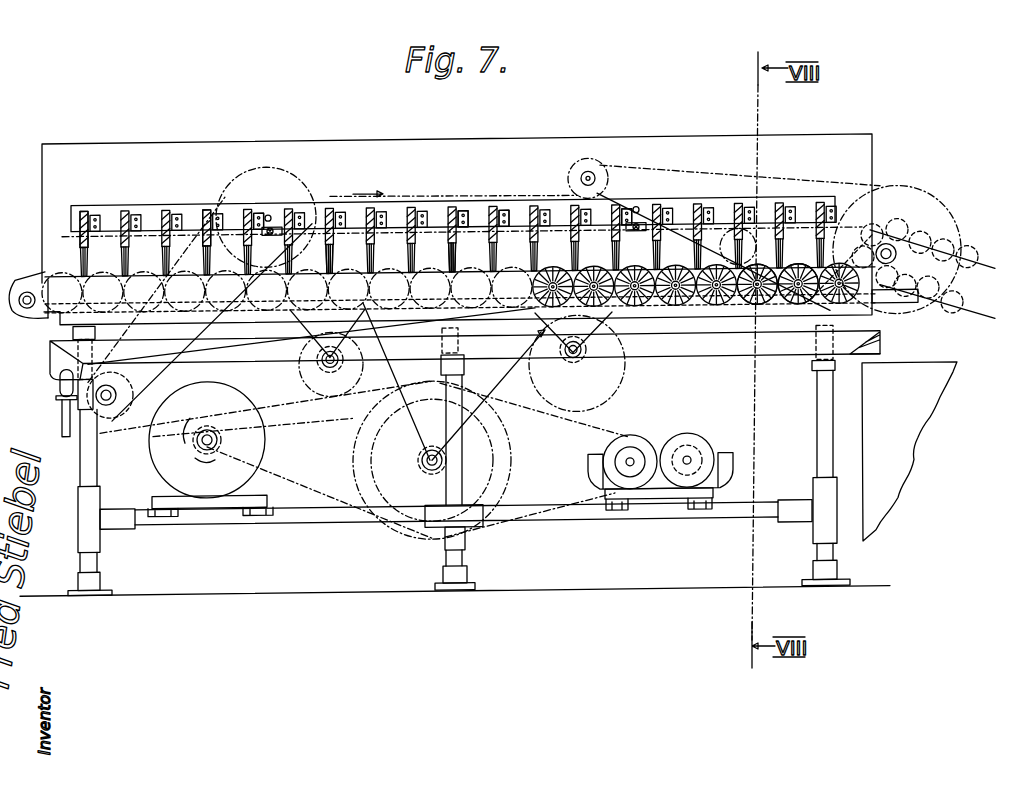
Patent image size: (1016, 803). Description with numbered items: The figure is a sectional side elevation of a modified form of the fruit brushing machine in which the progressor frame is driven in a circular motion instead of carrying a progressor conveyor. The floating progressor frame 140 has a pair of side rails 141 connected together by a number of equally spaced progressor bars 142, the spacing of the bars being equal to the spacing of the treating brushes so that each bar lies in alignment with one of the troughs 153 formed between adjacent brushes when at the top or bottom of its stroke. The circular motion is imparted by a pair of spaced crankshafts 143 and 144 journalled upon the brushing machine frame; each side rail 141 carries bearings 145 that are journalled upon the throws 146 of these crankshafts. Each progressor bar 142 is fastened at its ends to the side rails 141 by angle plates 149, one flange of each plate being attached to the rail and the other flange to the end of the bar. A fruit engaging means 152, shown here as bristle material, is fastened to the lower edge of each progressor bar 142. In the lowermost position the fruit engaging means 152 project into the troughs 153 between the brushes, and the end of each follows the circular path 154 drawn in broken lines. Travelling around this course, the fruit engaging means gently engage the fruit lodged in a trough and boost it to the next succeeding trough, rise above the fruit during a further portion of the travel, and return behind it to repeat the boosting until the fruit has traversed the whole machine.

The progressor frame 140 is at (152, 206).
The side rails 141 is at (194, 212).
The progressor bars 142 is at (86, 213).
The crankshaft 143 is at (271, 219).
The crankshaft 144 is at (638, 215).
The bearings 145 is at (291, 243).
The throws 146 is at (267, 239).
The angle plates 149 is at (503, 215).
The fruit engaging means 152 is at (334, 258).
The troughs 153 is at (760, 248).
The circular path 154 is at (753, 237).